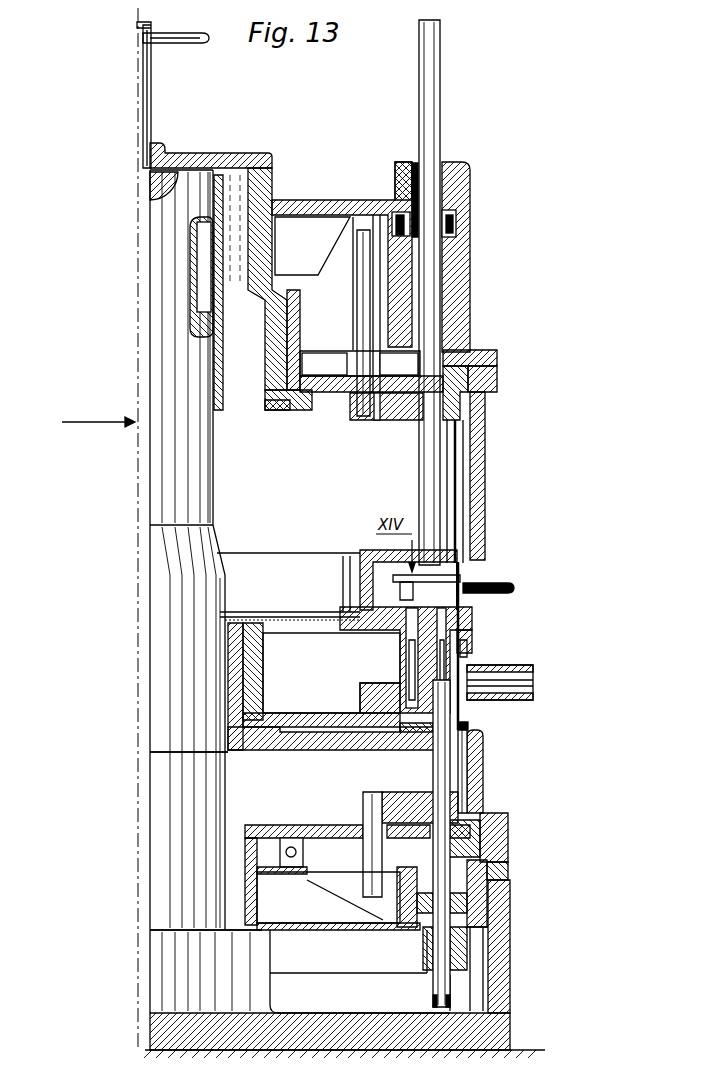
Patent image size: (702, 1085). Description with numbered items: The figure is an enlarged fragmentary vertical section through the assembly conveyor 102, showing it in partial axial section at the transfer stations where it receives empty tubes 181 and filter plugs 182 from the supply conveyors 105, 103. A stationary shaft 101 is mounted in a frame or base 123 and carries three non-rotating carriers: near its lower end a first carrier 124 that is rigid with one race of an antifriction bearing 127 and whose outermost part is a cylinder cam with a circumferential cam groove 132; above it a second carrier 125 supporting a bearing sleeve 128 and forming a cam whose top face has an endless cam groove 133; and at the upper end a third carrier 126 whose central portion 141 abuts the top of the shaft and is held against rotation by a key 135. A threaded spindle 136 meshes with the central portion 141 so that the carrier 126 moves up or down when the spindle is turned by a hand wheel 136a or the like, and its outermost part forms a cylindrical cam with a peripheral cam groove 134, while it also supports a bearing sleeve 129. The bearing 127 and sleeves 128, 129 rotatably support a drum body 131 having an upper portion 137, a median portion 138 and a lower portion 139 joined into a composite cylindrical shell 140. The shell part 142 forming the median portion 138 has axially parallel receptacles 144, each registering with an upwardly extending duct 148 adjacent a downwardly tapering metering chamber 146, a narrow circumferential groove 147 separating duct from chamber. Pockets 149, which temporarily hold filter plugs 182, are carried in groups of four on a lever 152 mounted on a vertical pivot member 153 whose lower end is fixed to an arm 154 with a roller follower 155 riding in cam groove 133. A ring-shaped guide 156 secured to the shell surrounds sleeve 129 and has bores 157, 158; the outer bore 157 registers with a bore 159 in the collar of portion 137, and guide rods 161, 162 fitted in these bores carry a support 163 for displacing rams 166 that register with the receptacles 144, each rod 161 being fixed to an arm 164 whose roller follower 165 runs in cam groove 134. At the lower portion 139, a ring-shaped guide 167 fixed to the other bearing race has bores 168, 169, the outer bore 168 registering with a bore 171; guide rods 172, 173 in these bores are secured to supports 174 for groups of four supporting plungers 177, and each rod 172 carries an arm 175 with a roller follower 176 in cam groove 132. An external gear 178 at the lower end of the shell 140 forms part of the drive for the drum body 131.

The shaft 101 is at (148, 489).
The assembly conveyor 102 is at (89, 414).
The supply conveyor 103 is at (510, 586).
The supply conveyor 105 is at (534, 698).
The stationary frame or base 123 is at (500, 911).
The first carrier 124 is at (244, 905).
The second carrier 125 is at (222, 752).
The third carrier 126 is at (273, 407).
The antifriction bearing 127 is at (281, 825).
The bearing sleeve 128 is at (268, 650).
The bearing sleeve 129 is at (290, 411).
The drum body 131 is at (512, 126).
The circumferential cam groove 132 is at (417, 929).
The endless cam groove 133 is at (393, 752).
The peripheral cam groove 134 is at (415, 162).
The key 135 is at (200, 256).
The threaded spindle 136 is at (152, 105).
The support arm 136a is at (179, 44).
The upper portion 137 is at (482, 303).
The median portion 138 is at (550, 581).
The lower portion 139 is at (526, 889).
The composite cylindrical shell 140 is at (490, 429).
The central portion 141 is at (190, 155).
The part of the shell 142 is at (468, 654).
The receptacles 144 is at (472, 648).
The metering chambers 146 is at (473, 615).
The circumferential groove 147 is at (473, 623).
The ducts 148 is at (473, 636).
The pockets 149 is at (461, 579).
The holding member or lever 152 is at (461, 575).
The pivot members 153 is at (413, 657).
The arms 154 is at (470, 723).
The roller followers 155 is at (427, 742).
The ring-shaped guide 156 is at (498, 374).
The outer vertical bore 157 is at (472, 352).
The inner vertical bore 158 is at (358, 352).
The bore 159 is at (442, 163).
The outer guide rod 161 is at (430, 268).
The guide rod 162 is at (358, 290).
The support 163 is at (448, 406).
The arm 164 is at (452, 227).
The roller follower 165 is at (393, 200).
The displacing rams 166 is at (458, 467).
The ring-shaped guide 167 is at (508, 824).
The outer bore 168 is at (508, 848).
The inner bore 169 is at (362, 867).
The bore 171 is at (428, 976).
The guide rod 172 is at (508, 875).
The guide rod 173 is at (370, 805).
The supports 174 is at (461, 803).
The arm 175 is at (477, 926).
The roller follower 176 is at (417, 923).
The supporting plungers 177 is at (486, 762).
The external gear 178 is at (470, 955).
The empty tubes 181 is at (470, 707).
The filter plugs 182 is at (462, 578).